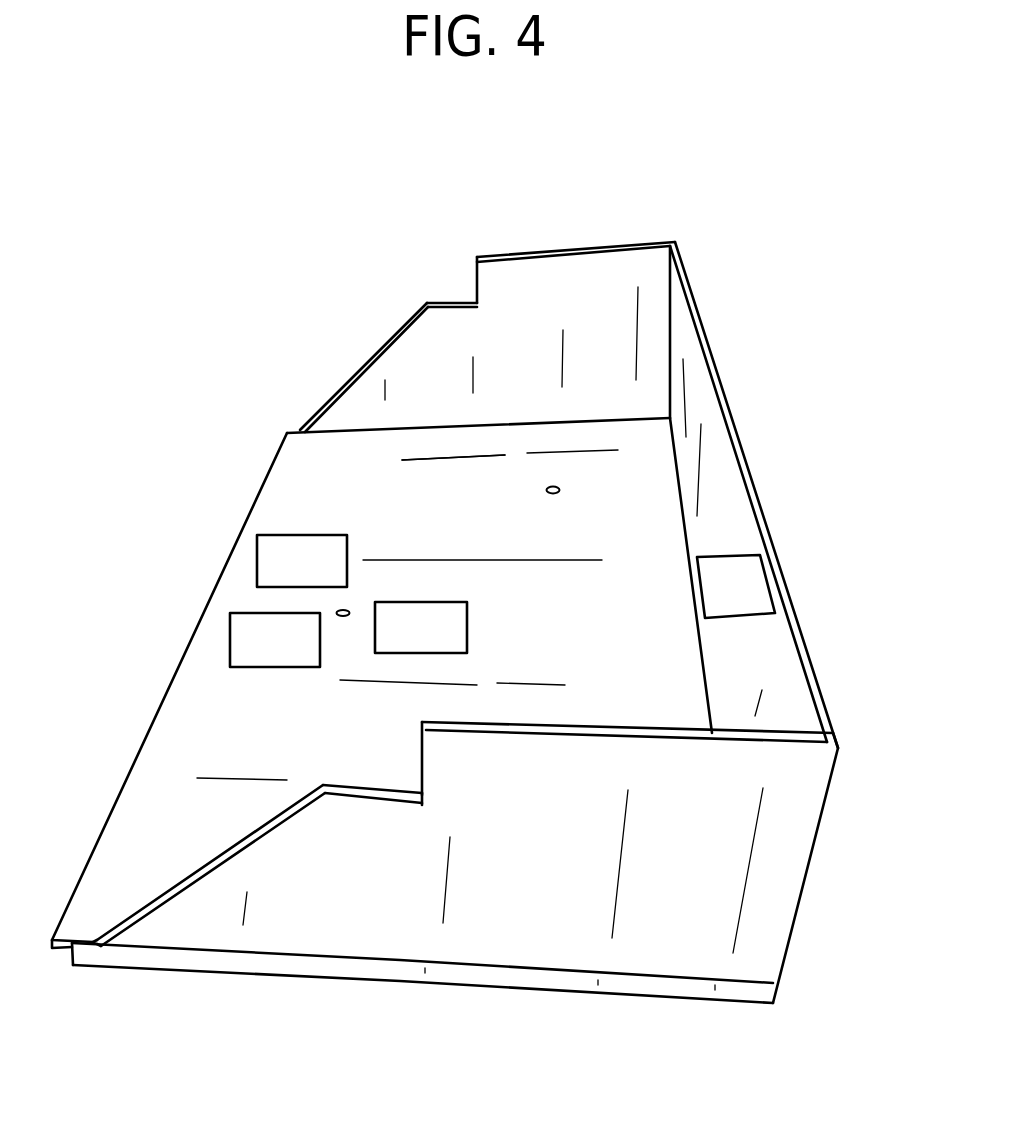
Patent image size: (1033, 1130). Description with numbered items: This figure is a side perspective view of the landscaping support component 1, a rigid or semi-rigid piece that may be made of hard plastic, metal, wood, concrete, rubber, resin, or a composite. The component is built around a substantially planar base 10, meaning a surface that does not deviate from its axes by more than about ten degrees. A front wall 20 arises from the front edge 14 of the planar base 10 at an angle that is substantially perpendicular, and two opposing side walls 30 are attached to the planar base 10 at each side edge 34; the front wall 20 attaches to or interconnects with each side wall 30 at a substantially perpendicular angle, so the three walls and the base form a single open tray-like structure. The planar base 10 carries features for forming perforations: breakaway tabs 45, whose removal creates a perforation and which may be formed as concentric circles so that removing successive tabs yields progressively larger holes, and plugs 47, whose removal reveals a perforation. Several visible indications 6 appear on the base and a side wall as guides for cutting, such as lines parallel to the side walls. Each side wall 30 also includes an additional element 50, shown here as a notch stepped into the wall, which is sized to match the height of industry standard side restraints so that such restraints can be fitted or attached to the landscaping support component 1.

The landscaping support component 1 is at (872, 1018).
The substantially planar base 10 is at (238, 703).
The front edge 14 is at (681, 520).
The front wall 20 is at (712, 516).
The side wall 30 is at (572, 277).
The side edge 34 is at (345, 427).
The breakaway tab 45 is at (302, 561).
The plug 47 is at (421, 627).
The visible indication 6 is at (502, 611).
The additional element 50 is at (440, 286).